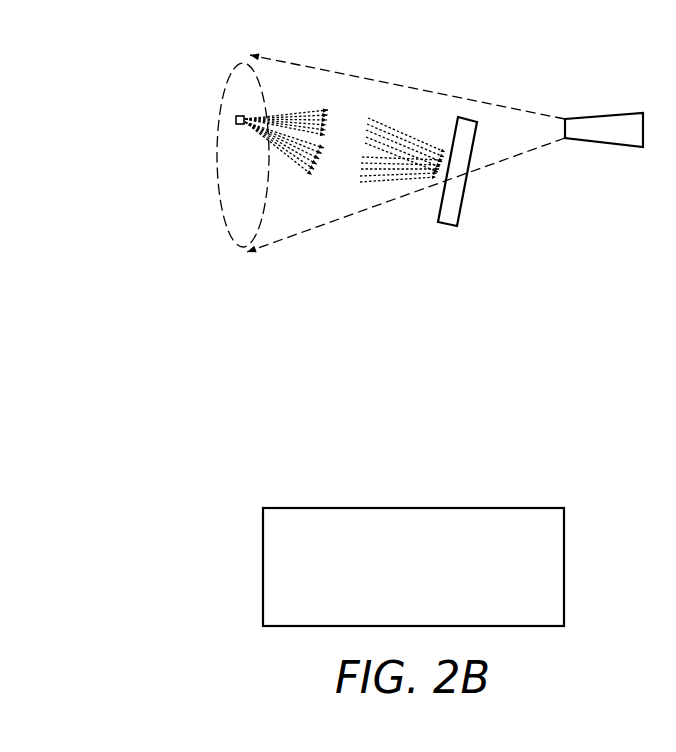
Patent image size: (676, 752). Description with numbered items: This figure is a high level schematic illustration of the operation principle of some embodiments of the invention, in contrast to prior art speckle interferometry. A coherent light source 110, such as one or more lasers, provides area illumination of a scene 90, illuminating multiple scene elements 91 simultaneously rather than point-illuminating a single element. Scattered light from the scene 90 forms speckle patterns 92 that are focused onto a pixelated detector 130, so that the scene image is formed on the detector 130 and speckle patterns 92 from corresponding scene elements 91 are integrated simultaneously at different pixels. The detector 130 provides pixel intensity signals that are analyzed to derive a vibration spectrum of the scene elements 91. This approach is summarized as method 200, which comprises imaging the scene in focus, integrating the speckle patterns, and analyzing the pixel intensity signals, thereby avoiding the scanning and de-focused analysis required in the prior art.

The scene 90 is at (226, 84).
The scene element 91 is at (236, 120).
The speckle pattern 92 is at (308, 110).
The pixelated detector 130 is at (466, 117).
The coherent light source 110 is at (626, 113).
The method 200 is at (263, 523).